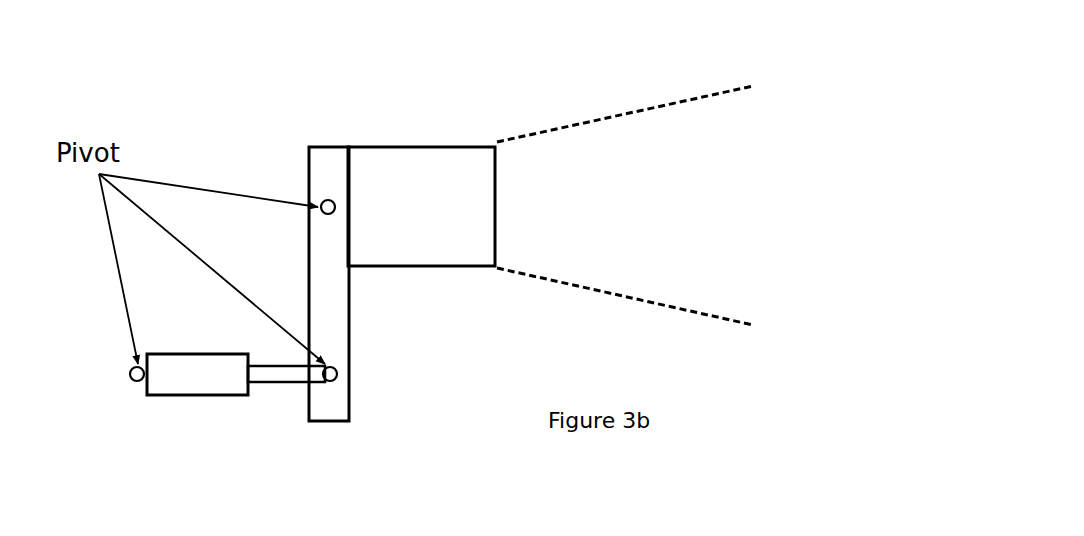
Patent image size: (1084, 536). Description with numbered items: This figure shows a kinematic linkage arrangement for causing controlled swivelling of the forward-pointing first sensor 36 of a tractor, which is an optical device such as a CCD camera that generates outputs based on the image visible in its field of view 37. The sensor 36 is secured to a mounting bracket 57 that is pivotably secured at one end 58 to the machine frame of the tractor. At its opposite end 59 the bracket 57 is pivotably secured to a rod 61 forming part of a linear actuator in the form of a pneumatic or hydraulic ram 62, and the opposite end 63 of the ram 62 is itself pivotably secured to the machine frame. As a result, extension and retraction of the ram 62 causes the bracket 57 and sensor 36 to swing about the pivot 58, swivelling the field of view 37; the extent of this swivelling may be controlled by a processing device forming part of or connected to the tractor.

The first sensor 36 is at (410, 178).
The field of view 37 is at (697, 133).
The mounting bracket 57 is at (330, 325).
The pivot 58 is at (323, 200).
The opposite end of bracket 59 is at (330, 382).
The rod 61 is at (282, 378).
The ram 62 is at (173, 380).
The opposite end of ram 63 is at (130, 375).